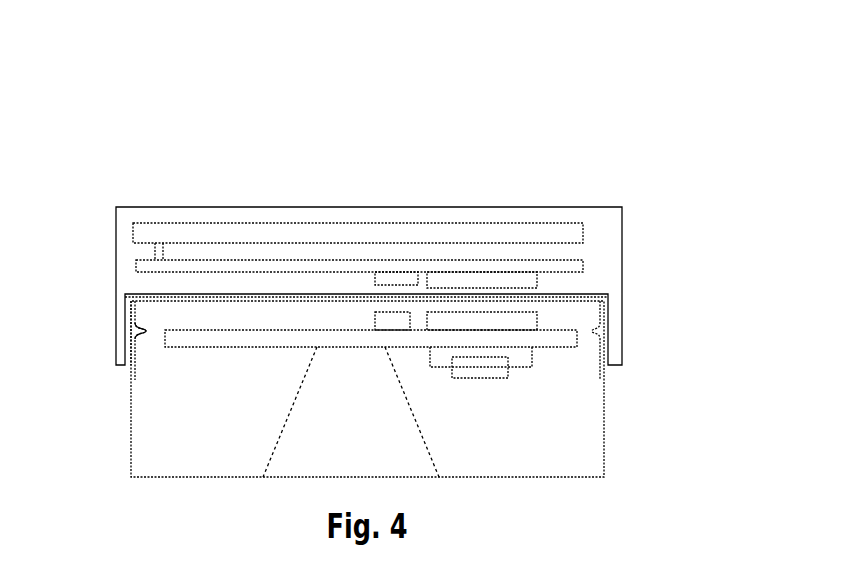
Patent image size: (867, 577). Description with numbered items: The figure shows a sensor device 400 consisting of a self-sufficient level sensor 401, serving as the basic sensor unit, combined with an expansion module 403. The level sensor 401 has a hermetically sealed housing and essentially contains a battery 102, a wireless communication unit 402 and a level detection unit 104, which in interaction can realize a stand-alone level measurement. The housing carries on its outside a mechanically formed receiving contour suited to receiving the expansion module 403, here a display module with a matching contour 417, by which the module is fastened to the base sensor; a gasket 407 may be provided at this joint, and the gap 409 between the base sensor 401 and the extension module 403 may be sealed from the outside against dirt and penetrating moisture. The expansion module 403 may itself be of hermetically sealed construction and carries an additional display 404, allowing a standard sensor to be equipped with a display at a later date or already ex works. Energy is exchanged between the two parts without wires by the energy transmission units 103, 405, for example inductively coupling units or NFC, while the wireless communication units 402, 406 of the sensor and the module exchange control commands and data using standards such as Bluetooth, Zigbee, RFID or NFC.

The electronic device assembly 400 is at (468, 128).
The level sensor 401 is at (604, 425).
The wireless communication unit 402 is at (375, 325).
The expansion module 403 is at (622, 263).
The display 404 is at (265, 225).
The energy transmission unit 405 is at (537, 284).
The wireless communication unit 406 is at (410, 280).
The gasket 407 is at (146, 335).
The gap 409 is at (140, 297).
The contour 417 is at (130, 332).
The battery 102 is at (463, 378).
The energy transmission unit 103 is at (537, 320).
The level detection unit 104 is at (283, 428).